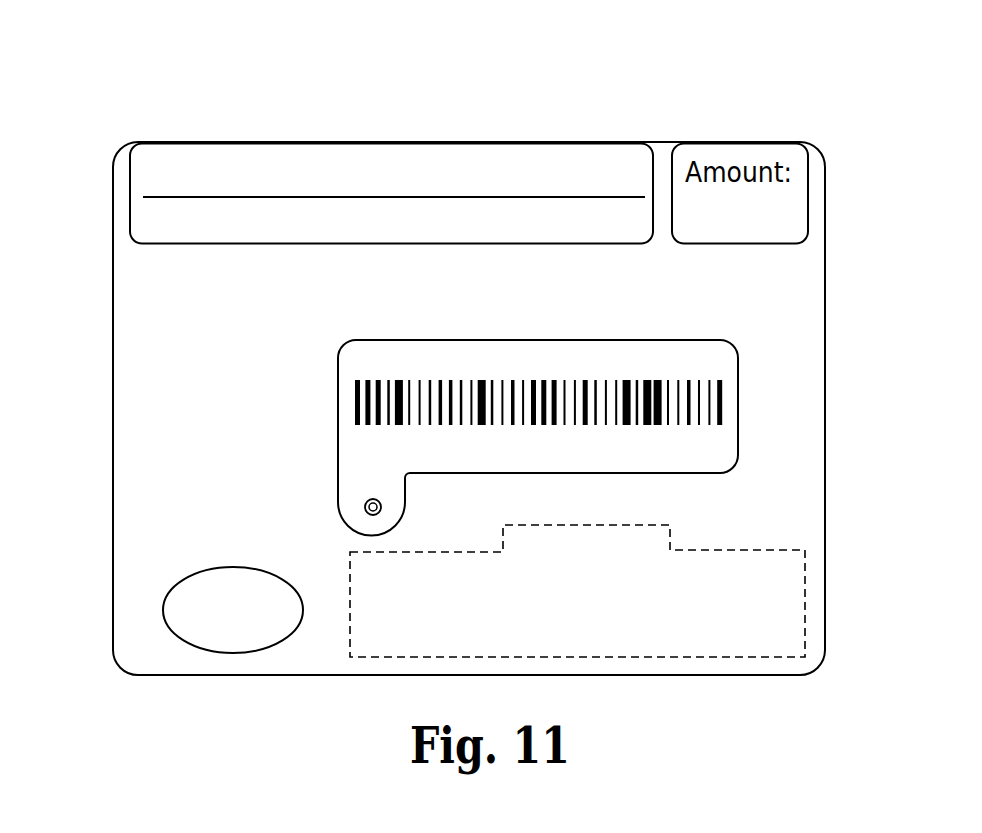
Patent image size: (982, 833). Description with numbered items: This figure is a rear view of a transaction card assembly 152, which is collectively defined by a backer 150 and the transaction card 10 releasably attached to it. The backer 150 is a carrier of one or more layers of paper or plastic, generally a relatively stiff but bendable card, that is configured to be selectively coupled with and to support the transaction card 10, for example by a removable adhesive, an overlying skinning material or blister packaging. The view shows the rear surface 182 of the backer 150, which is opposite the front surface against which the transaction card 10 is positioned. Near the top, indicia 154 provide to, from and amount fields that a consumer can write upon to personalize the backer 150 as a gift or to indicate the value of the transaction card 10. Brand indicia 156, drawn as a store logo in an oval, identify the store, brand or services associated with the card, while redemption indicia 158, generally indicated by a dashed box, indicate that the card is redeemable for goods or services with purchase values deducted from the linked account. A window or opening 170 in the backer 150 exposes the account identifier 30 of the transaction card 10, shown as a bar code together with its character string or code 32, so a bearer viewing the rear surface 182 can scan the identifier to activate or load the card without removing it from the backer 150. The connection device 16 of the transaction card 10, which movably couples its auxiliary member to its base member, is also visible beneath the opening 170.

The transaction card 10 is at (473, 431).
The connection device 16 is at (364, 507).
The account identifier 30 is at (722, 400).
The character string or code 32 is at (720, 447).
The backer 150 is at (112, 125).
The transaction card assembly 152 is at (144, 76).
The indicia 154 is at (273, 170).
The brand indicia 156 is at (228, 645).
The redemption indicia 158 is at (806, 612).
The window or opening 170 is at (738, 360).
The rear surface 182 is at (133, 327).